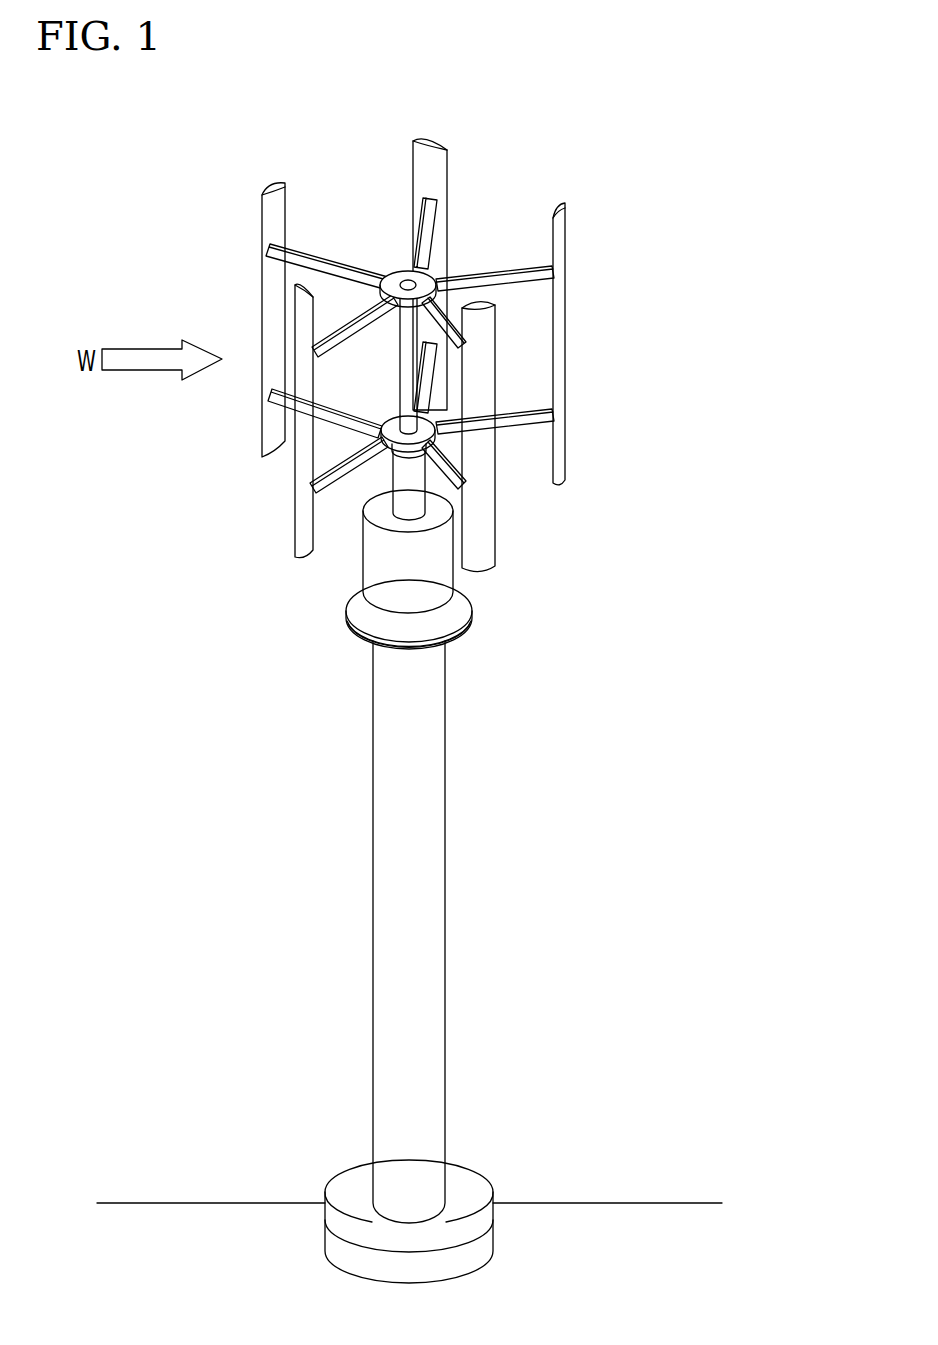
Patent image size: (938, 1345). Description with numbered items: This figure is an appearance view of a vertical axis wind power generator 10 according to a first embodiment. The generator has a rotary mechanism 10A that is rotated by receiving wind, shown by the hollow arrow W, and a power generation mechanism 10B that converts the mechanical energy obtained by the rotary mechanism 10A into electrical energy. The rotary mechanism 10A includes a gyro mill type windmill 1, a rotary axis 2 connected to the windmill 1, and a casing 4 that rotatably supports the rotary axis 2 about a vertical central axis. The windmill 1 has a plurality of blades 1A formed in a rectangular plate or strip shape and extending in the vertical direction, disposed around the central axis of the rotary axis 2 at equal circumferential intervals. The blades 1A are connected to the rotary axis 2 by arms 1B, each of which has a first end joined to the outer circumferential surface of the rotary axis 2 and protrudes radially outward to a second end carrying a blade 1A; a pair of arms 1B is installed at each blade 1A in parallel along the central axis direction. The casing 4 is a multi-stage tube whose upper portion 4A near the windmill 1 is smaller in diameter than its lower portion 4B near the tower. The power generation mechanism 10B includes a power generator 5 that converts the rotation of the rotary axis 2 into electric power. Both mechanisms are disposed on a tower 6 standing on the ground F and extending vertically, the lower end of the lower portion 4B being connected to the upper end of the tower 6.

The windmill 1 is at (430, 134).
The blades 1A is at (447, 187).
The arms 1B is at (315, 250).
The rotary axis 2 is at (400, 394).
The casing 4 is at (388, 470).
The upper portion 4A is at (410, 493).
The lower portion 4B is at (410, 598).
The power generator 5 is at (388, 577).
The tower 6 is at (447, 722).
The vertical axis wind power generator 10 is at (652, 122).
The rotary mechanism 10A is at (600, 403).
The power generation mechanism 10B is at (303, 612).
The ground F is at (604, 1203).